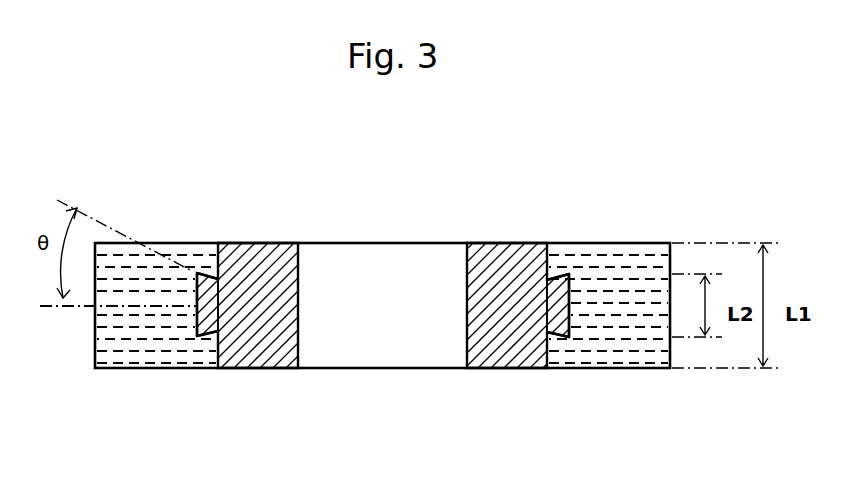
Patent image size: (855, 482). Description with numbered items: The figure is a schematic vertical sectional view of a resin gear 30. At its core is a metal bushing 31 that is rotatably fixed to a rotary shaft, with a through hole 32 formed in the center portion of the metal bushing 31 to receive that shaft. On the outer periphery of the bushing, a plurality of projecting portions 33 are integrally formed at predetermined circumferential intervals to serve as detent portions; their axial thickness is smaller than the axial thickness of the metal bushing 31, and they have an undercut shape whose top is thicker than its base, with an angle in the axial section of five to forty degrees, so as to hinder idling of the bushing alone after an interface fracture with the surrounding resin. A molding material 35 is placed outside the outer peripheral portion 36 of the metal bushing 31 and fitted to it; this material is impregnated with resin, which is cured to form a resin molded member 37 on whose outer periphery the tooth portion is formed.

The resin gear 30 is at (603, 225).
The metal bushing 31 is at (262, 268).
The through hole 32 is at (467, 340).
The projecting portions 33 is at (195, 325).
The molding material 35 is at (143, 368).
The outer peripheral portion 36 is at (548, 353).
The resin molded member 37 is at (122, 337).